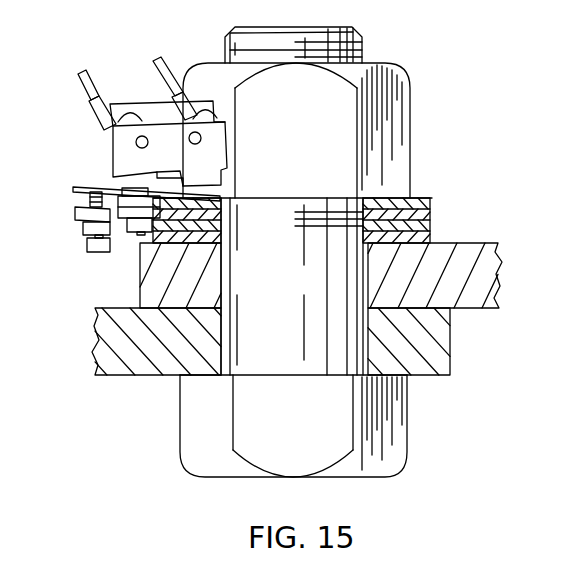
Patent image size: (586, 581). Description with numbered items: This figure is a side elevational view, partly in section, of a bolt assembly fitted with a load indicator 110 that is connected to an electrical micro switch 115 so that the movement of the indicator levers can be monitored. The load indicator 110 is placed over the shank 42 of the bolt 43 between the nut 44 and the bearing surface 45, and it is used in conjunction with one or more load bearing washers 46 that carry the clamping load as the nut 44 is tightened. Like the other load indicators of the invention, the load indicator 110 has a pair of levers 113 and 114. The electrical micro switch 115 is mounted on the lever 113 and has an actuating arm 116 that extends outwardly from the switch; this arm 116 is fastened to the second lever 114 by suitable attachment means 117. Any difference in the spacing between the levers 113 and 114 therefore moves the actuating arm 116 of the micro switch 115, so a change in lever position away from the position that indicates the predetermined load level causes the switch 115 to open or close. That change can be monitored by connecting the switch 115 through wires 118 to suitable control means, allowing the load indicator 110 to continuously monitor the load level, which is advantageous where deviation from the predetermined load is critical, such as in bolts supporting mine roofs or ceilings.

The shank 42 is at (362, 48).
The bolt 43 is at (400, 443).
The nut 44 is at (402, 126).
The bearing surface 45 is at (490, 243).
The load bearing washers 46 is at (436, 198).
The load indicator 110 is at (328, 206).
The lever 113 is at (124, 236).
The second lever 114 is at (77, 216).
The electrical micro switch 115 is at (122, 140).
The actuating arm 116 is at (79, 186).
The attachment means 117 is at (88, 253).
The wires 118 is at (93, 86).